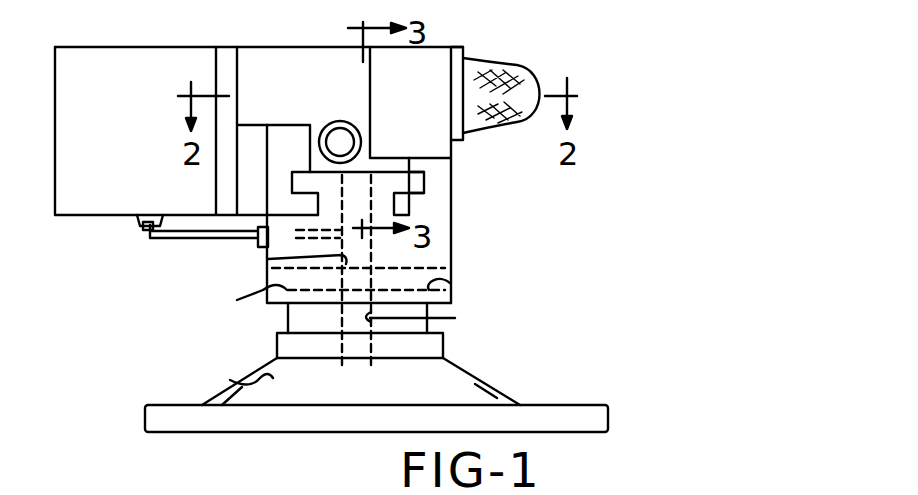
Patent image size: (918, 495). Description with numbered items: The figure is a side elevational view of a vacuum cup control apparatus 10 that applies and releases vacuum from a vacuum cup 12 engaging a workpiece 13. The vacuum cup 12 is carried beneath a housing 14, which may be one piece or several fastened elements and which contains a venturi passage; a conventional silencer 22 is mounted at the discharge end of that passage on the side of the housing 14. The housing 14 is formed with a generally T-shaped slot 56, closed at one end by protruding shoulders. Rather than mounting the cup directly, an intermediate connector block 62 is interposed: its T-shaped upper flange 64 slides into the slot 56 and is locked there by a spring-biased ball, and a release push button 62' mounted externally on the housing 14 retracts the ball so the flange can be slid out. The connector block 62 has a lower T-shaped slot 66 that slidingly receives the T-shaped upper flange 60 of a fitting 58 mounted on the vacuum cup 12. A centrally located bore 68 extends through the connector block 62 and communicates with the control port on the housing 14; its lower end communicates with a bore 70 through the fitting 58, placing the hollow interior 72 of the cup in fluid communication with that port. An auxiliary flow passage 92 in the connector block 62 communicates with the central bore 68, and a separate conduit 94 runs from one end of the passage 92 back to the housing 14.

The vacuum cup control apparatus 10 is at (171, 33).
The vacuum cup 12 is at (492, 379).
The workpiece 13 is at (573, 405).
The housing 14 is at (232, 21).
The silencer 22 is at (512, 65).
The T-shaped slot 56 is at (422, 192).
The fitting 58 is at (278, 320).
The T-shaped upper flange 60 is at (232, 302).
The intermediate connector block 62 is at (426, 246).
The release push button 62' is at (320, 82).
The T-shaped upper flange 64 is at (300, 182).
The lower T-shaped slot 66 is at (451, 285).
The central bore 68 is at (260, 258).
The bore 70 is at (458, 320).
The hollow interior 72 is at (230, 380).
The auxiliary flow passage 92 is at (282, 235).
The conduit 94 is at (147, 237).